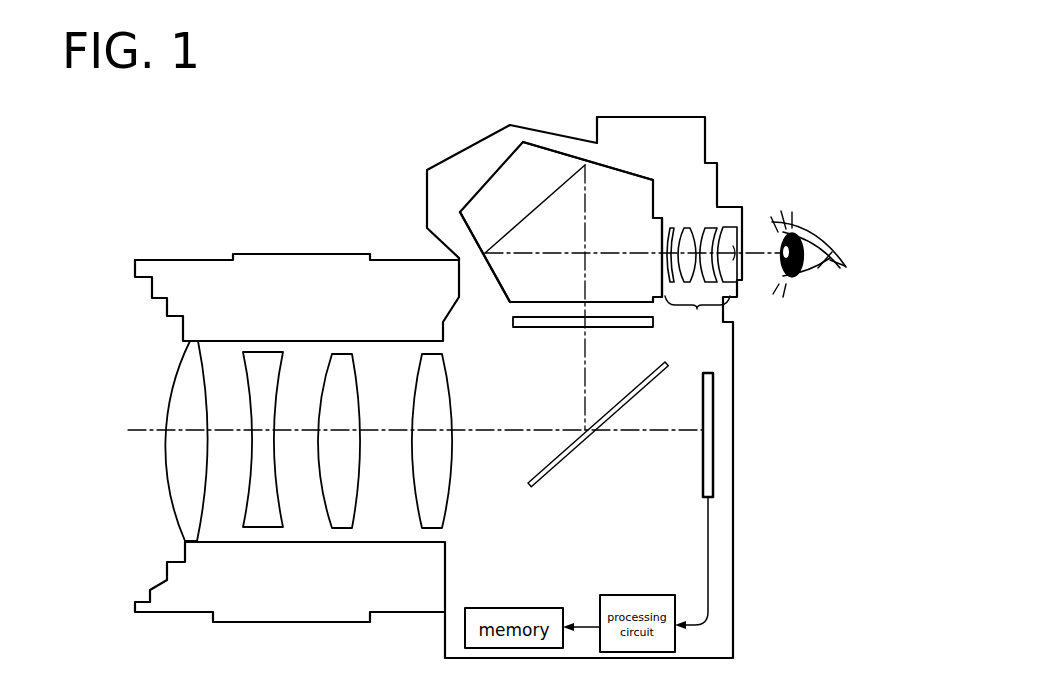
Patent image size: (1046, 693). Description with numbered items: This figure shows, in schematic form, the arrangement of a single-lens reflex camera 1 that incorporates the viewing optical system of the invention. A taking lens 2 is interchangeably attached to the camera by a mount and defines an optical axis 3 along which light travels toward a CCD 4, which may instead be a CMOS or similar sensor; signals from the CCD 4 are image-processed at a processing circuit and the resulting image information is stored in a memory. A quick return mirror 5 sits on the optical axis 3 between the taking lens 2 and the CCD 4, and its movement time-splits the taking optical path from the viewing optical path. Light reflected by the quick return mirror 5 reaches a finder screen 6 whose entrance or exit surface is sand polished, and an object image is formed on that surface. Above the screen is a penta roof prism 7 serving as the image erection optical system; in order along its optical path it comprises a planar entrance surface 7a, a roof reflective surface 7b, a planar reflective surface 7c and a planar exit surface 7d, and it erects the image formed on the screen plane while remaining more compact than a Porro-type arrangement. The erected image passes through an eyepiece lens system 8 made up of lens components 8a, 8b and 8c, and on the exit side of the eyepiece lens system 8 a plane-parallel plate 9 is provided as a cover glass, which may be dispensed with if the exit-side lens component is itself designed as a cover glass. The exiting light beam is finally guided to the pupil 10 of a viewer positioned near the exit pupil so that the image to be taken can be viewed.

The single-lens reflex camera 1 is at (415, 96).
The taking lens 2 is at (162, 517).
The optical axis 3 is at (487, 433).
The CCD 4 is at (703, 477).
The quick return mirror 5 is at (558, 468).
The finder screen 6 is at (540, 330).
The penta roof prism 7 is at (630, 173).
The planar entrance surface 7a is at (530, 304).
The roof reflective surface 7b is at (553, 150).
The planar reflective surface 7c is at (477, 237).
The planar exit surface 7d is at (658, 244).
The eyepiece lens system 8 is at (725, 248).
The eyepiece lens component 8a is at (669, 227).
The eyepiece lens component 8b is at (684, 228).
The eyepiece lens component 8c is at (705, 231).
The plane-parallel plate 9 is at (740, 263).
The pupil 10 is at (823, 261).